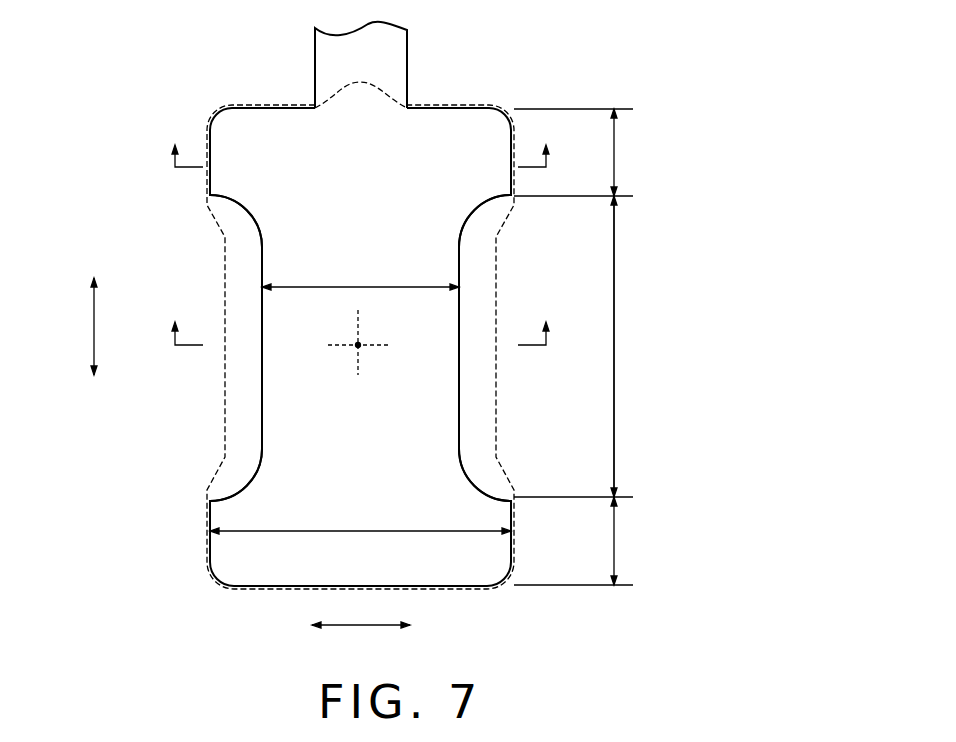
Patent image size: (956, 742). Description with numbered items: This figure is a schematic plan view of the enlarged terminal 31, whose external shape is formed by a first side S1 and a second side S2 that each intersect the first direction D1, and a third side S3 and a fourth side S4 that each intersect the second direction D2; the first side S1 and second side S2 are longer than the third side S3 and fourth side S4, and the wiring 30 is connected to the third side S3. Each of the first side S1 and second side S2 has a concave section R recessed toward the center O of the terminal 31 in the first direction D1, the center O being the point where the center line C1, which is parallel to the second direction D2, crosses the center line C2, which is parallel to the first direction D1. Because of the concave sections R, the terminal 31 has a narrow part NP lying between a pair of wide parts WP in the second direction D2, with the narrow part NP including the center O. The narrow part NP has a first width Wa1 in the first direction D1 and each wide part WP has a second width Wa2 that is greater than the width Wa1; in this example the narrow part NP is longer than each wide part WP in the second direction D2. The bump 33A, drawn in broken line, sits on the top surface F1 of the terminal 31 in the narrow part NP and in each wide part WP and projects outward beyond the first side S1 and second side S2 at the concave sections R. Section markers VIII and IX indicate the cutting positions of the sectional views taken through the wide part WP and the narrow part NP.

The wiring 30 is at (407, 42).
The terminal 31 is at (264, 100).
The bump 33A is at (497, 250).
The first side S1 is at (208, 518).
The second side S2 is at (513, 512).
The third side S3 is at (452, 107).
The fourth side S4 is at (447, 588).
The top surface F1 is at (290, 430).
The concave section R is at (256, 383).
The center O is at (361, 343).
The center line C1 is at (360, 357).
The center line C2 is at (380, 346).
The width Wa1 is at (360, 274).
The width Wa2 is at (360, 518).
The wide part WP is at (587, 347).
The narrow part NP is at (636, 346).
The first direction D1 is at (361, 643).
The second direction D2 is at (75, 326).
The section line VIII is at (362, 143).
The section line IX is at (360, 319).